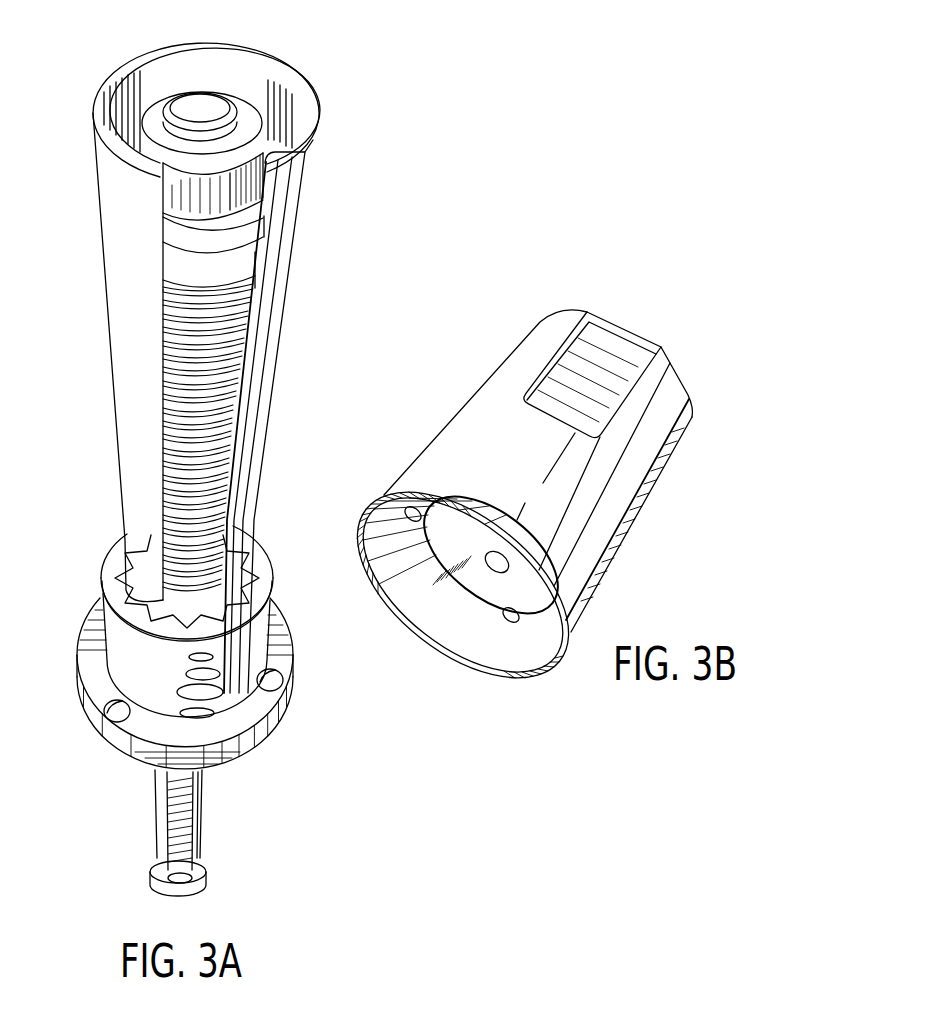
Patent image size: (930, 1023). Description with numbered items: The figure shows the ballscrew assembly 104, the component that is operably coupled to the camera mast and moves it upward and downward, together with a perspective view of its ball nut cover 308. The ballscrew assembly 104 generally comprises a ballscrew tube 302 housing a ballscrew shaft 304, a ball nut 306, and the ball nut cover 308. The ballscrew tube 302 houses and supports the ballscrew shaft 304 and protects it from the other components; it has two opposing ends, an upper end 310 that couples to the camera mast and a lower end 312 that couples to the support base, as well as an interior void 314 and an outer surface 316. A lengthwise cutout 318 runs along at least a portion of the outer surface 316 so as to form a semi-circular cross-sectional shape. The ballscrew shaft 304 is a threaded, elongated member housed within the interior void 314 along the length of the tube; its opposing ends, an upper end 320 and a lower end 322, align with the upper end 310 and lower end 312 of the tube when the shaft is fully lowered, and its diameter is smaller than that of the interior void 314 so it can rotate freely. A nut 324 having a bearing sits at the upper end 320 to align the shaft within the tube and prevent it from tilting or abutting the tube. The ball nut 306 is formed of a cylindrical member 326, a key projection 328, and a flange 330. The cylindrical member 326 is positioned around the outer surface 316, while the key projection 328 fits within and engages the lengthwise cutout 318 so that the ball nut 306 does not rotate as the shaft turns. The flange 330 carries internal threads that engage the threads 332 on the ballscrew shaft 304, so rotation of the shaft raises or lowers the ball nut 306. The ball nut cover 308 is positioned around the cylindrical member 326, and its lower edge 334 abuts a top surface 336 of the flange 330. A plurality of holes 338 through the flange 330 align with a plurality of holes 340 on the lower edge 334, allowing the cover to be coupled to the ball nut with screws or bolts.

In FIG. 3A, the ballscrew assembly 104 is at (86, 251).
In FIG. 3A, the ballscrew tube 302 is at (305, 260).
In FIG. 3A, the ballscrew shaft 304 is at (267, 571).
In FIG. 3A, the ball nut 306 is at (74, 650).
In FIG. 3B, the ball nut cover 308 is at (508, 345).
In FIG. 3A, the upper end 310 is at (317, 160).
In FIG. 3A, the lower end 312 is at (203, 884).
In FIG. 3A, the interior void 314 is at (218, 486).
In FIG. 3A, the outer surface 316 is at (118, 406).
In FIG. 3A, the lengthwise cutout 318 is at (163, 474).
In FIG. 3A, the upper end 320 is at (270, 107).
In FIG. 3A, the lower end 322 is at (125, 580).
In FIG. 3A, the nut 324 is at (153, 120).
In FIG. 3A, the cylindrical member 326 is at (252, 705).
In FIG. 3A, the key projection 328 is at (160, 632).
In FIG. 3A, the flange 330 is at (255, 750).
In FIG. 3A, the threads 332 is at (163, 338).
In FIG. 3B, the lower edge 334 is at (550, 661).
In FIG. 3A, the top surface 336 is at (147, 738).
In FIG. 3A, the holes 338 is at (100, 712).
In FIG. 3B, the holes 340 is at (404, 505).